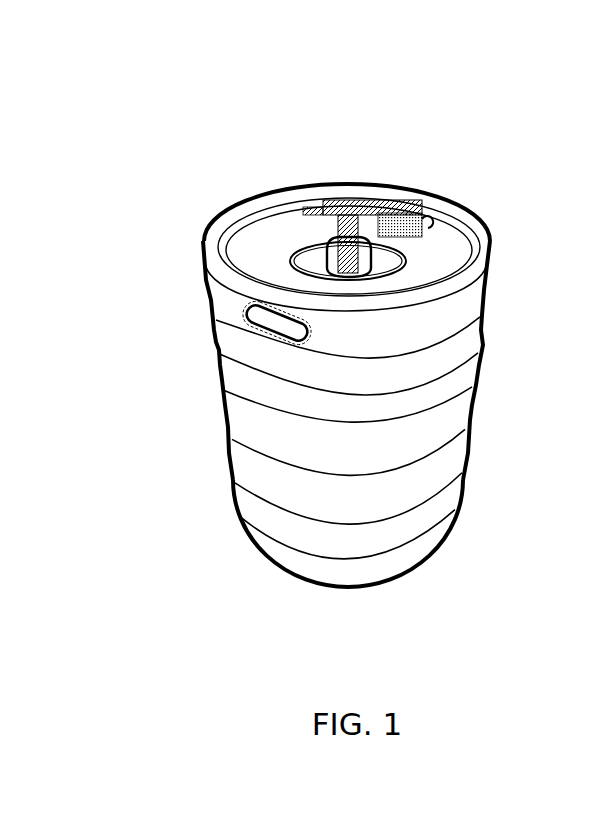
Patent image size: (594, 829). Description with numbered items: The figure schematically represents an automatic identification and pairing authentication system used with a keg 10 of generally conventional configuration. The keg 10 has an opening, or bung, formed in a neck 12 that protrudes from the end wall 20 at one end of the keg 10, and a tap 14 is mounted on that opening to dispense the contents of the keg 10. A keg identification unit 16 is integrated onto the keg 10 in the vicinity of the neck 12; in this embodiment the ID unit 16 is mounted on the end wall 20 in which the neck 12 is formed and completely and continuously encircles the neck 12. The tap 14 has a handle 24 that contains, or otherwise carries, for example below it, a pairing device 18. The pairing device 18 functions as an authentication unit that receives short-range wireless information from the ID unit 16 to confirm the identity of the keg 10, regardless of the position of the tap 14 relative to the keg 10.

The keg 10 is at (448, 415).
The neck 12 is at (327, 258).
The tap 14 is at (333, 181).
The keg identification unit 16 is at (296, 237).
The pairing device 18 is at (408, 236).
The end wall 20 is at (268, 255).
The handle 24 is at (383, 210).